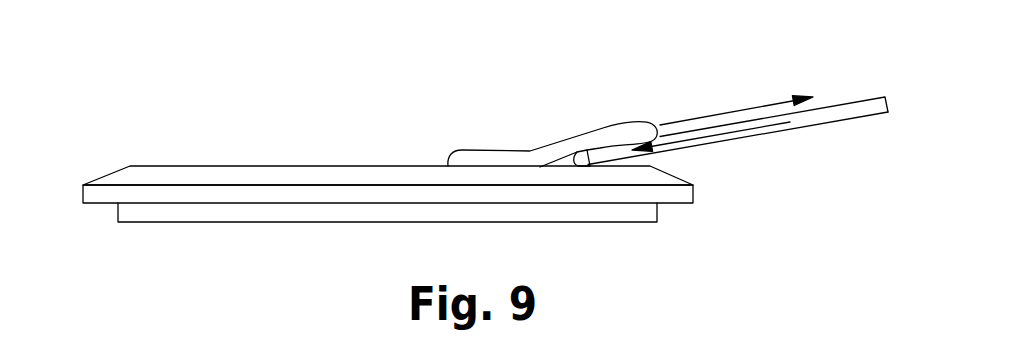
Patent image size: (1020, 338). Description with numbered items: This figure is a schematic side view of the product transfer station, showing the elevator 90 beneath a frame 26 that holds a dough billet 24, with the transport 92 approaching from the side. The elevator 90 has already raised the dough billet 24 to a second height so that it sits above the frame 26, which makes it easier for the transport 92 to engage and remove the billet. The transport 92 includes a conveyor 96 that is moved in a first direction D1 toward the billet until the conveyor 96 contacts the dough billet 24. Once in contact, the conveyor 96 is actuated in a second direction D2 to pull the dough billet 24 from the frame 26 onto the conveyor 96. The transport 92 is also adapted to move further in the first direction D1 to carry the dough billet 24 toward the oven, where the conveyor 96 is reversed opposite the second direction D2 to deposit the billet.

The dough billet 24 is at (613, 134).
The frame 26 is at (697, 193).
The elevator 90 is at (143, 222).
The transport 92 is at (848, 85).
The conveyor 96 is at (828, 117).
The first direction D1 is at (773, 128).
The second direction D2 is at (739, 108).